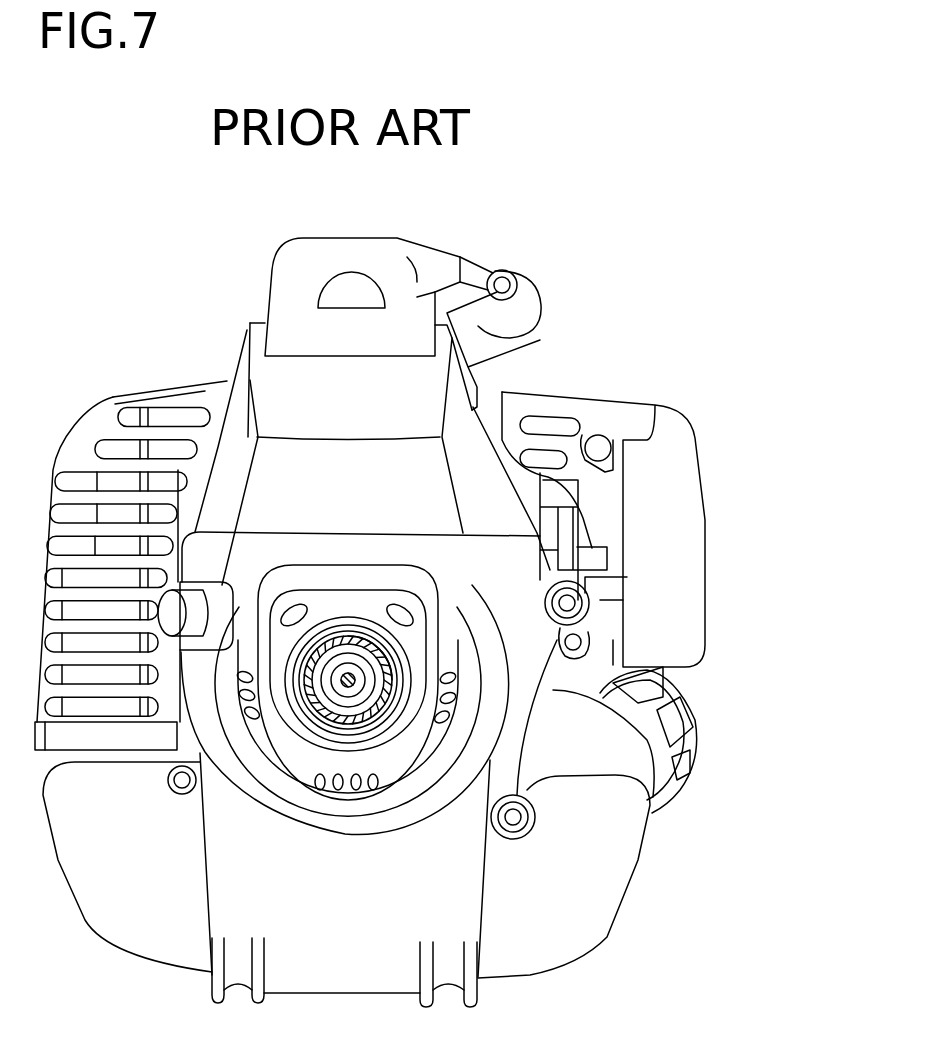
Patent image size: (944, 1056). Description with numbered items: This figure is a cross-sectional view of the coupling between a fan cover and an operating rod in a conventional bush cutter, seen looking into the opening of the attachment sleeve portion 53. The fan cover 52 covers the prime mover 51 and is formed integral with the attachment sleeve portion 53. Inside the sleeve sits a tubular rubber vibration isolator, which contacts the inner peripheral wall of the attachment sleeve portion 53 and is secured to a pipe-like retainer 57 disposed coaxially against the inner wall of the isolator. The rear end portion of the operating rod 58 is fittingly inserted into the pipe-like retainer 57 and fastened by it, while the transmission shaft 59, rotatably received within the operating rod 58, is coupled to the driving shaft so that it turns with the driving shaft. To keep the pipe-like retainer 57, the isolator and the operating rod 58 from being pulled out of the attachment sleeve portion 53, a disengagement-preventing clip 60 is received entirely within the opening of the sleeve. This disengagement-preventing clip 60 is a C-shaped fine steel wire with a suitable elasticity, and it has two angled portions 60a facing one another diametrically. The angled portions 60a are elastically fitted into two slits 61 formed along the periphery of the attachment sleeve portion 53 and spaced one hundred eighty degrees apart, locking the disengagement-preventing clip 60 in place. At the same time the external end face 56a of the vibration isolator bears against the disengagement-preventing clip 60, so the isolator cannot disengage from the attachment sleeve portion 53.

The prime mover 51 is at (570, 268).
The fan cover 52 is at (440, 637).
The attachment sleeve portion 53 is at (527, 790).
The external end face of the vibration isolator 56a is at (342, 627).
The pipe-like retainer 57 is at (372, 676).
The operating rod 58 is at (363, 723).
The transmission shaft 59 is at (340, 748).
The disengagement-preventing clip 60 is at (341, 592).
The angled portions 60a is at (400, 668).
The slits 61 is at (258, 668).